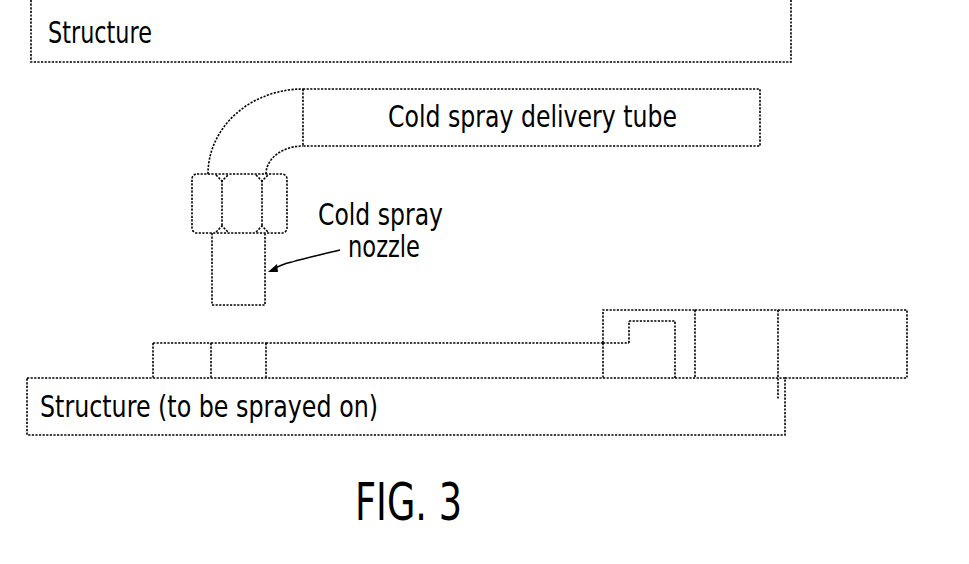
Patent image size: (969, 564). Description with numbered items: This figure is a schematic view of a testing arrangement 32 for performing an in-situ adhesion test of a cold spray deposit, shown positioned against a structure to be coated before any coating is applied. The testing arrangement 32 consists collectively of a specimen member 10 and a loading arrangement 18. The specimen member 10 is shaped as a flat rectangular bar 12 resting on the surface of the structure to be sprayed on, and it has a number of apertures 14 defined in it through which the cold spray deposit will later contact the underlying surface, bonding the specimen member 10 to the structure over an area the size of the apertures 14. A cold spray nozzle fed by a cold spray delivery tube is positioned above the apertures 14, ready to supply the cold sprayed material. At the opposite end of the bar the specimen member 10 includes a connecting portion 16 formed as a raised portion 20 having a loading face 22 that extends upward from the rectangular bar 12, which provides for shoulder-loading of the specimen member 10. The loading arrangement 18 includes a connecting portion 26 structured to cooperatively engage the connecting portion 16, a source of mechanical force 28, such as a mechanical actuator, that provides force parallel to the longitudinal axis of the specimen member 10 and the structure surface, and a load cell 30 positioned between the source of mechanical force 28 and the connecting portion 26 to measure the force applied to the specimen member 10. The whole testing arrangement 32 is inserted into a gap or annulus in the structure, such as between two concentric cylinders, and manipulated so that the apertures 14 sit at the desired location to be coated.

The specimen member 10 is at (427, 320).
The flat rectangular bar 12 is at (470, 355).
The aperture 14 is at (268, 363).
The connecting portion 16 is at (650, 298).
The loading arrangement 18 is at (773, 312).
The raised portion 20 is at (647, 322).
The loading face 22 is at (627, 327).
The connecting portion 26 is at (682, 333).
The source of mechanical force 28 is at (843, 320).
The load cell 30 is at (723, 323).
The testing arrangement 32 is at (583, 247).